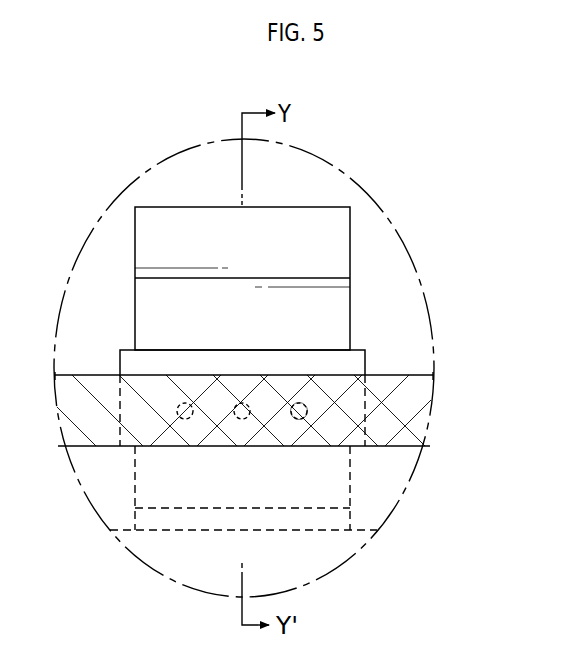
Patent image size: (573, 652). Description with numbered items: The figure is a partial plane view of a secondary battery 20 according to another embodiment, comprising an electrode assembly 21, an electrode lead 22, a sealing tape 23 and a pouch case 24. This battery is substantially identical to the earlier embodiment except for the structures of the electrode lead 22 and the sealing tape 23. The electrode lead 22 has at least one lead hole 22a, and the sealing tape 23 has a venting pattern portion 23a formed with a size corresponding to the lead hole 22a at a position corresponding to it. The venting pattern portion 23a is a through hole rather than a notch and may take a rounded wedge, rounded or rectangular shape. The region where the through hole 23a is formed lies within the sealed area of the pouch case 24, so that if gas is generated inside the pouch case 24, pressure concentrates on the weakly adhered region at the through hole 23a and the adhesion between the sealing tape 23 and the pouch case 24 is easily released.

The secondary battery 20 is at (367, 151).
The electrode assembly 21 is at (343, 550).
The electrode lead 22 is at (345, 222).
The lead hole 22a is at (306, 408).
The sealing tape 23 is at (364, 350).
The venting pattern portion 23a is at (299, 411).
The pouch case 24 is at (410, 374).